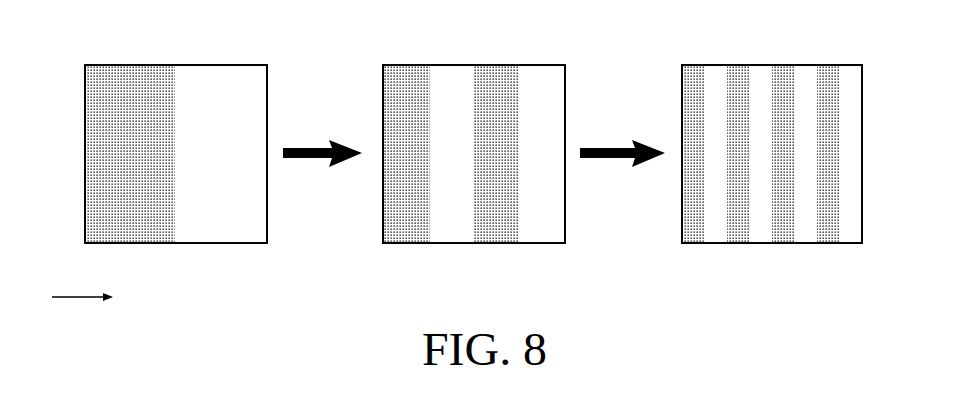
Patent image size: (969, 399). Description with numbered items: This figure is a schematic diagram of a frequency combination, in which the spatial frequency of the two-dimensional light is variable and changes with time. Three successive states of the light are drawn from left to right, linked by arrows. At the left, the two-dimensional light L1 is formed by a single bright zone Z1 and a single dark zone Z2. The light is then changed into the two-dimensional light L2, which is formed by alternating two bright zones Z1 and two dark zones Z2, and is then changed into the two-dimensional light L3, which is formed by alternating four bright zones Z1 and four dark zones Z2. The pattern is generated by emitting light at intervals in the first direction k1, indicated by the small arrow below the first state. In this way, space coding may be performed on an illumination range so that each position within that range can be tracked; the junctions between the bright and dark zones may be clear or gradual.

The two-dimensional light L1 is at (85, 77).
The two-dimensional light L2 is at (383, 77).
The two-dimensional light L3 is at (862, 77).
The bright zone Z1 is at (217, 80).
The dark zone Z2 is at (127, 80).
The first direction k1 is at (97, 297).